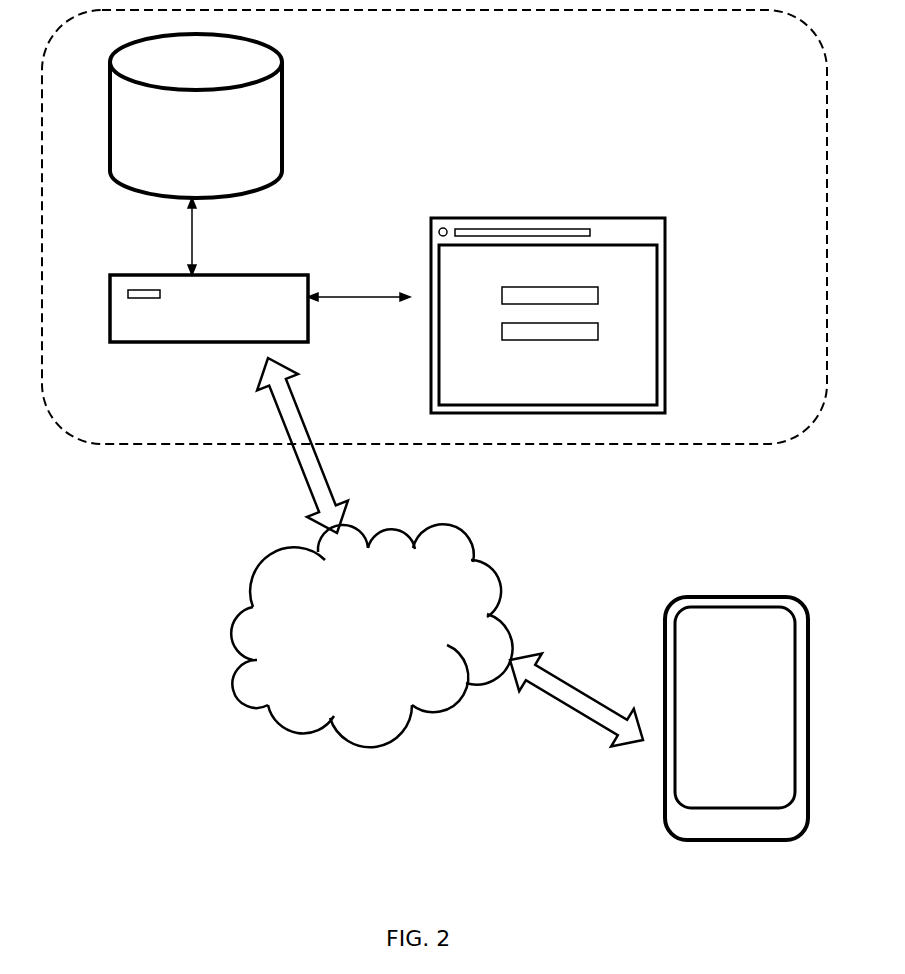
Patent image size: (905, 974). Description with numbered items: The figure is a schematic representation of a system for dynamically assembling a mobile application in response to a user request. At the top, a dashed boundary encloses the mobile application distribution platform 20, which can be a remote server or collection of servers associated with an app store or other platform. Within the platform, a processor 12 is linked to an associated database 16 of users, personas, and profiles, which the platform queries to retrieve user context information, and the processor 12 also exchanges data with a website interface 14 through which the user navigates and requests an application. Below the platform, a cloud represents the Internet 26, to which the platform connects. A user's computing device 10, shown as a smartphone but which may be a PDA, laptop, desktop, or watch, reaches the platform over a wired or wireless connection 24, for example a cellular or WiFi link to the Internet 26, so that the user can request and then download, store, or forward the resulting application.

The computing device 10 is at (745, 587).
The processor 12 is at (162, 350).
The website interface 14 is at (672, 219).
The database 16 is at (283, 118).
The mobile application distribution platform 20 is at (633, 43).
The connection 24 is at (573, 647).
The Internet 26 is at (498, 572).